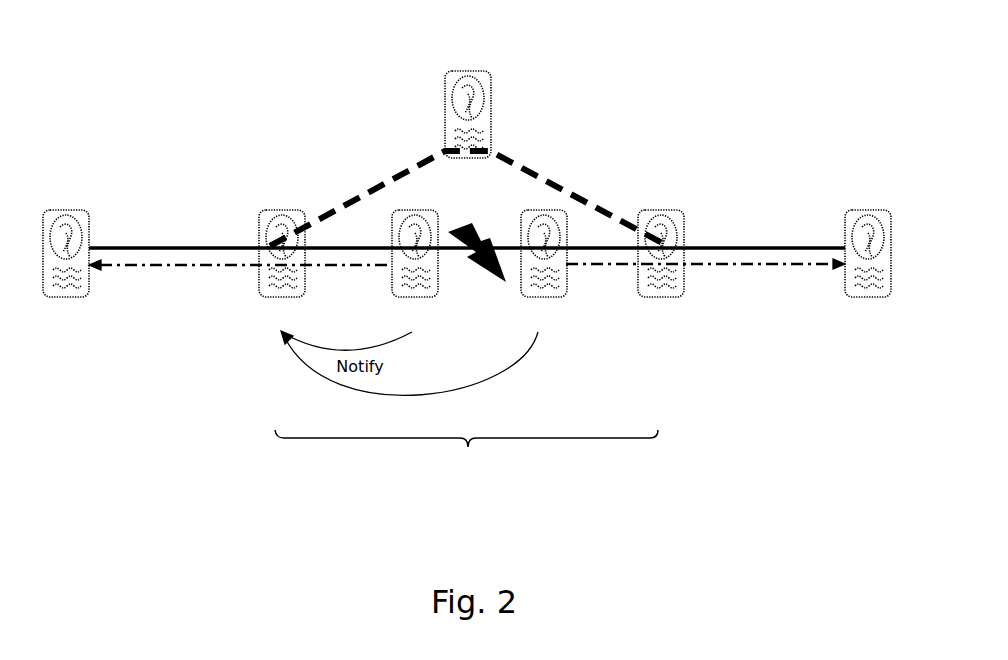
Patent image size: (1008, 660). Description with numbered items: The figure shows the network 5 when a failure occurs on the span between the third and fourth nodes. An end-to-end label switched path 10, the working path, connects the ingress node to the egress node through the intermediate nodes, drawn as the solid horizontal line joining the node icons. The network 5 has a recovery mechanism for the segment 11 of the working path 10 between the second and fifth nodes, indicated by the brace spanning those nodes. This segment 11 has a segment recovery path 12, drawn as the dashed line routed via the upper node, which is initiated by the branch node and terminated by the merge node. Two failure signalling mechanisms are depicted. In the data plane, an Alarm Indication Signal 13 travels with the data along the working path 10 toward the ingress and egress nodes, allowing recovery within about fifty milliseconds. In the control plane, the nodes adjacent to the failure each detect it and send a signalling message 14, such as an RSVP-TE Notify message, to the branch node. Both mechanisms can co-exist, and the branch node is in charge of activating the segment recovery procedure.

The network 5 is at (738, 74).
The label switched path 10 is at (162, 248).
The segment 11 is at (466, 454).
The segment recovery path 12 is at (534, 163).
The Alarm Indication Signal 13 is at (203, 267).
The signalling message 14 is at (532, 352).